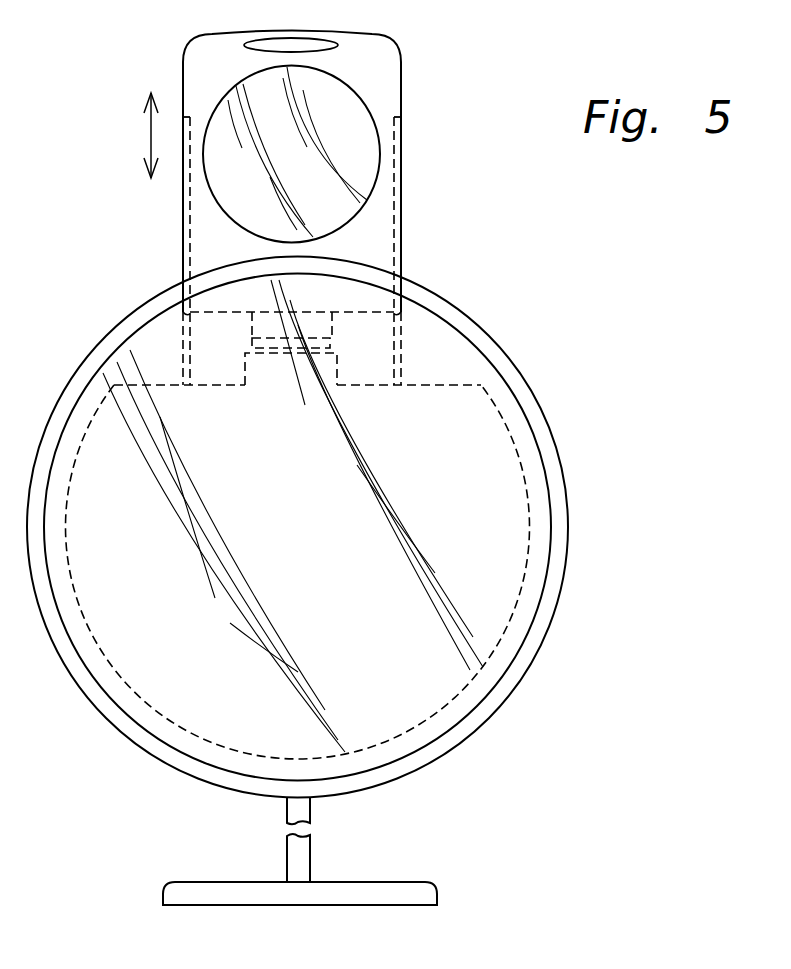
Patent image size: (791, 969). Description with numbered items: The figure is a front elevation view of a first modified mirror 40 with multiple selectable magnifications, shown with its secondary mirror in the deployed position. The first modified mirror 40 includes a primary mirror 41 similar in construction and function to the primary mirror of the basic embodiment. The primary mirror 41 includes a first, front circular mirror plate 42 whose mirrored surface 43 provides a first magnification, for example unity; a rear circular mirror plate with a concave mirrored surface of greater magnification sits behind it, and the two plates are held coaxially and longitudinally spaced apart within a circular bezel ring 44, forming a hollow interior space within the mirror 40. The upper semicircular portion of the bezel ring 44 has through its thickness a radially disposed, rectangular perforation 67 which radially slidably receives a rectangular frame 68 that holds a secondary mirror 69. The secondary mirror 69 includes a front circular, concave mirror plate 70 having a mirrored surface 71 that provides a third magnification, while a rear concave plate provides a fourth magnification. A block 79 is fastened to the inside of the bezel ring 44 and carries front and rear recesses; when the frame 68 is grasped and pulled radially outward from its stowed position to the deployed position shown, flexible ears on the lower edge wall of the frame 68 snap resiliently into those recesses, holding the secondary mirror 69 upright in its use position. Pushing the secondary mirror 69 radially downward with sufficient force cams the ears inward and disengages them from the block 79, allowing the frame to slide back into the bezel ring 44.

The first modified mirror 40 is at (367, 237).
The primary mirror 41 is at (525, 362).
The front circular mirror plate 42 is at (522, 410).
The mirrored surface 43 is at (485, 473).
The bezel ring 44 is at (326, 535).
The rectangular perforation 67 is at (404, 275).
The rectangular frame 68 is at (344, 237).
The secondary mirror 69 is at (362, 154).
The front circular concave mirror plate 70 is at (374, 152).
The mirrored surface 71 is at (366, 165).
The block 79 is at (328, 373).